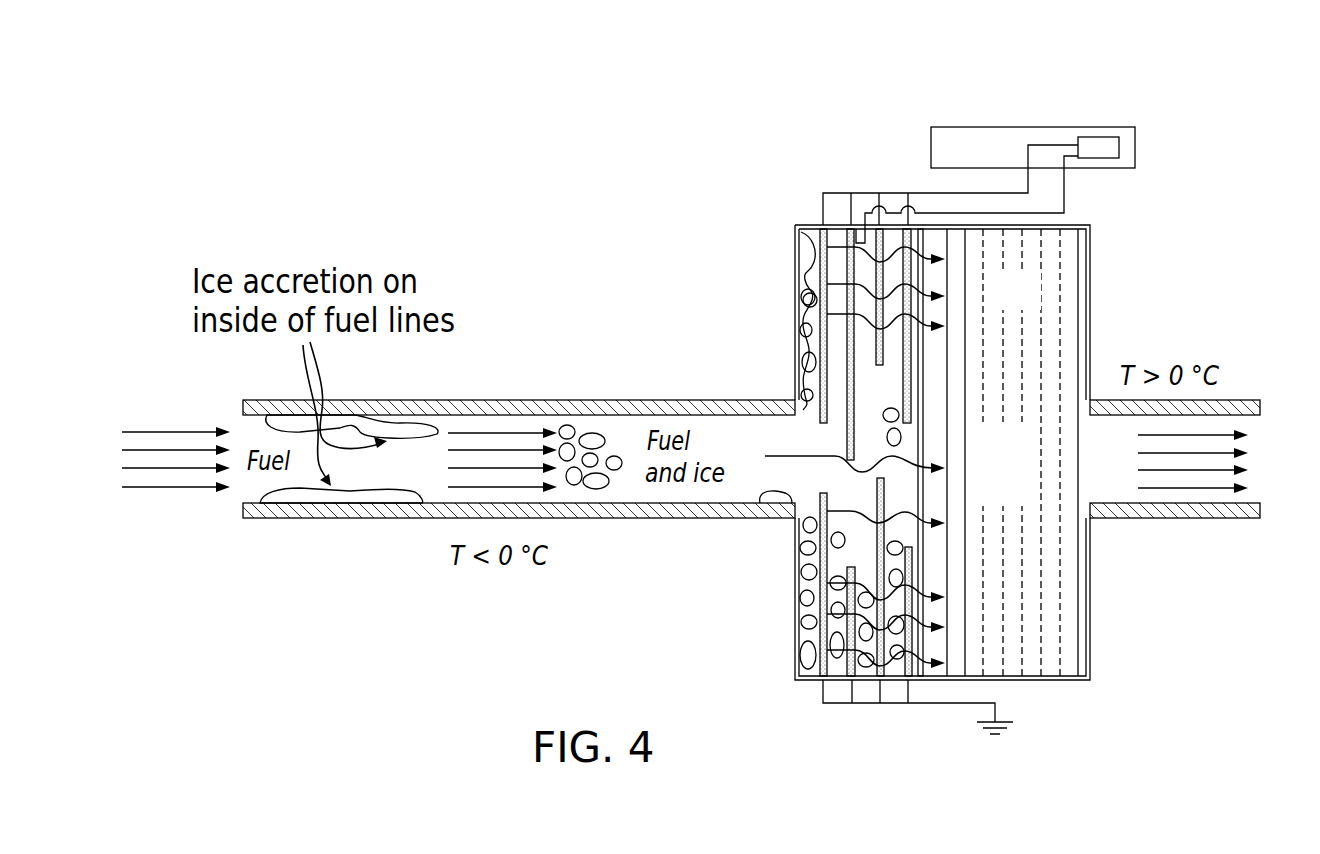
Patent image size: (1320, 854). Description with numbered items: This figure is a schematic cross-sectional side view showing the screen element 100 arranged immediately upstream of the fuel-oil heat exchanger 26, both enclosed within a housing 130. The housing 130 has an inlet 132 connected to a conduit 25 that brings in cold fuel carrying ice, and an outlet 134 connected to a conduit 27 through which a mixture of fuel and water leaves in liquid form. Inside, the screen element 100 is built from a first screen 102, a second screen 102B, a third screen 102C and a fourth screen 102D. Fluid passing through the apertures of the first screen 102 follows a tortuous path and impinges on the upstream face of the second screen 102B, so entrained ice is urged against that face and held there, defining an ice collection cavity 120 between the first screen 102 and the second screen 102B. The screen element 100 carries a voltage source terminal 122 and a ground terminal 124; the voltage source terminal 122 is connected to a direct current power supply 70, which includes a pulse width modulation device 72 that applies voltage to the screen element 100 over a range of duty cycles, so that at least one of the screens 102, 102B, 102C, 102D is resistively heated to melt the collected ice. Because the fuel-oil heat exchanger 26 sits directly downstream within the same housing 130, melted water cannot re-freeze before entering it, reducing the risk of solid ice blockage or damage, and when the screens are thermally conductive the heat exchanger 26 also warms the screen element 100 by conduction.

The conduit 25 is at (531, 404).
The fuel-oil heat exchanger 26 is at (1014, 424).
The conduit 27 is at (1153, 513).
The direct current power supply 70 is at (1076, 100).
The pulse width modulation device 72 is at (1119, 147).
The screen element 100 is at (838, 142).
The first screen 102 is at (818, 538).
The second screen 102B is at (846, 605).
The third screen 102C is at (878, 573).
The fourth screen 102D is at (910, 558).
The ice collection cavity 120 is at (787, 278).
The voltage source terminal 122 is at (893, 192).
The ground terminal 124 is at (893, 704).
The housing 130 is at (1090, 275).
The inlet 132 is at (783, 451).
The outlet 134 is at (1127, 462).